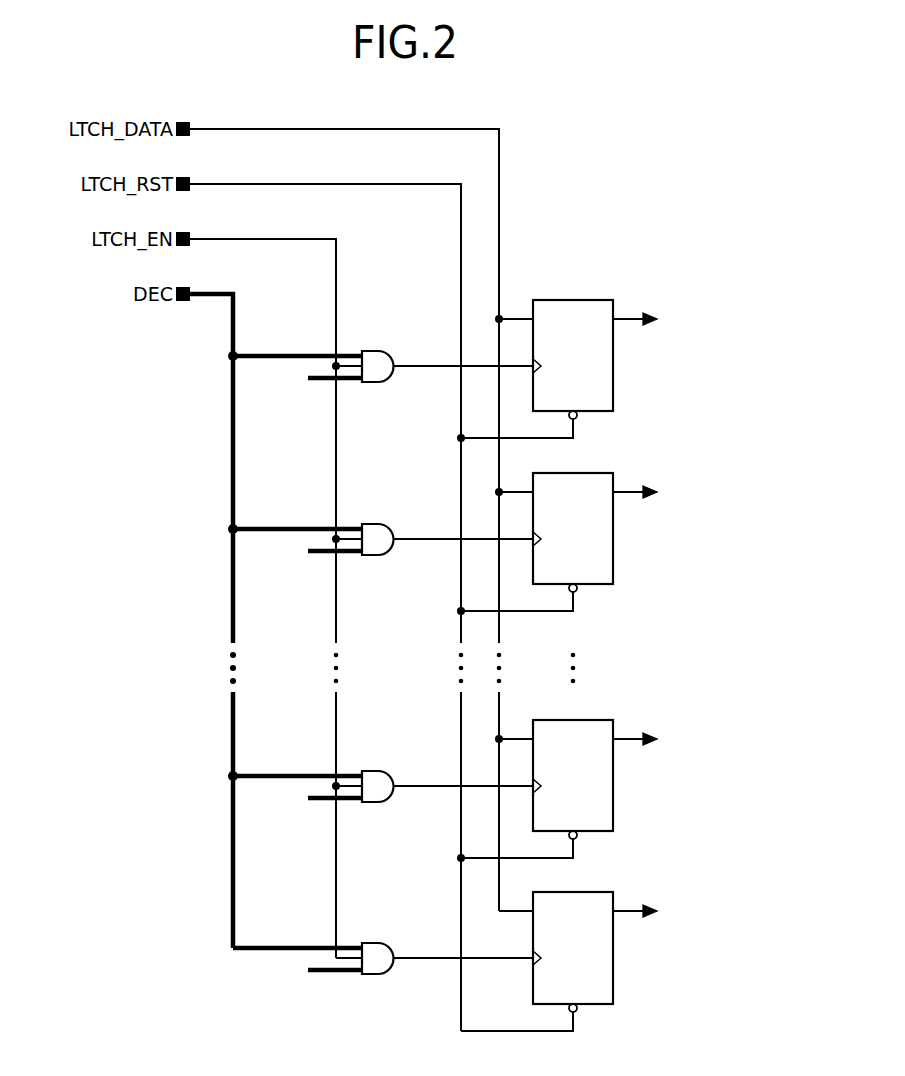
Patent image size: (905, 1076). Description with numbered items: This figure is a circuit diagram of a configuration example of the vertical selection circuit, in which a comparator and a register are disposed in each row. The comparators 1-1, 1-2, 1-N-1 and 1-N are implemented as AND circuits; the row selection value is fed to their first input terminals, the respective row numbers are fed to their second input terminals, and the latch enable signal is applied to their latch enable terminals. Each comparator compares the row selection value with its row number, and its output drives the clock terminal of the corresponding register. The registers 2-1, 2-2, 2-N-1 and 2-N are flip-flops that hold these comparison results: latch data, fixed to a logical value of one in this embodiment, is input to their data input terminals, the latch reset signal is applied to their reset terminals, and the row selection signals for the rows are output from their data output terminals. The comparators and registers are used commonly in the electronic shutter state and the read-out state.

The comparator 1-1 is at (388, 332).
The comparator 1-2 is at (388, 505).
The comparator 1-N-1 is at (388, 752).
The comparator 1-N is at (388, 924).
The register 2-1 is at (570, 281).
The register 2-2 is at (570, 454).
The register 2-N-1 is at (570, 701).
The register 2-N is at (570, 873).